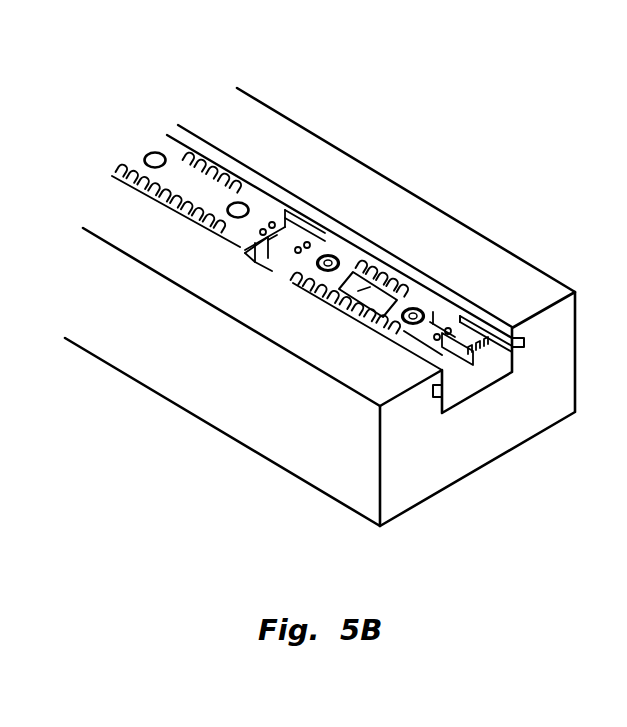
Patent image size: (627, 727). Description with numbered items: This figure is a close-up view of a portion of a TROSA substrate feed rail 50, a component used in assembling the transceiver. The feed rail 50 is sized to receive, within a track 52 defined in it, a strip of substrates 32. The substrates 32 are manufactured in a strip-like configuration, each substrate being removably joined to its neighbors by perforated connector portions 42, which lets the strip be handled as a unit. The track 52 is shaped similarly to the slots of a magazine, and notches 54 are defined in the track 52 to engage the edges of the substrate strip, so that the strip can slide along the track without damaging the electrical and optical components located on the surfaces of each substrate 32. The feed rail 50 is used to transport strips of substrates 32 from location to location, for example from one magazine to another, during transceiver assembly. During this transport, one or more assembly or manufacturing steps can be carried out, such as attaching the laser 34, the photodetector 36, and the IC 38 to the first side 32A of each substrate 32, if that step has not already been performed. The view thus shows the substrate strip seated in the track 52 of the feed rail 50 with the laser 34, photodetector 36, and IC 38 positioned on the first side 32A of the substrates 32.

The TROSA substrate feed rail 50 is at (240, 110).
The laser 34 is at (336, 258).
The first side 32A is at (433, 312).
The notches 54 is at (523, 340).
The perforated connector portions 42 is at (262, 248).
The IC 38 is at (338, 290).
The track 52 is at (517, 358).
The photodetector 36 is at (417, 328).
The substrates 32 is at (410, 338).